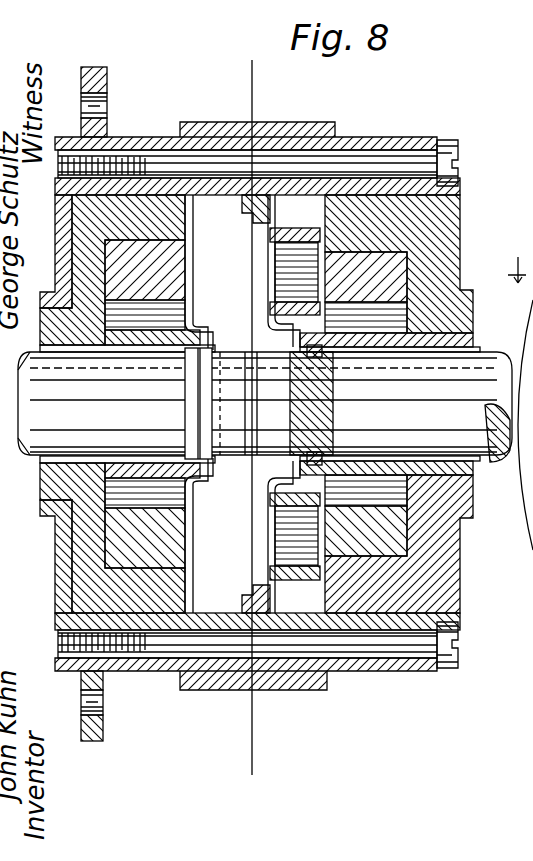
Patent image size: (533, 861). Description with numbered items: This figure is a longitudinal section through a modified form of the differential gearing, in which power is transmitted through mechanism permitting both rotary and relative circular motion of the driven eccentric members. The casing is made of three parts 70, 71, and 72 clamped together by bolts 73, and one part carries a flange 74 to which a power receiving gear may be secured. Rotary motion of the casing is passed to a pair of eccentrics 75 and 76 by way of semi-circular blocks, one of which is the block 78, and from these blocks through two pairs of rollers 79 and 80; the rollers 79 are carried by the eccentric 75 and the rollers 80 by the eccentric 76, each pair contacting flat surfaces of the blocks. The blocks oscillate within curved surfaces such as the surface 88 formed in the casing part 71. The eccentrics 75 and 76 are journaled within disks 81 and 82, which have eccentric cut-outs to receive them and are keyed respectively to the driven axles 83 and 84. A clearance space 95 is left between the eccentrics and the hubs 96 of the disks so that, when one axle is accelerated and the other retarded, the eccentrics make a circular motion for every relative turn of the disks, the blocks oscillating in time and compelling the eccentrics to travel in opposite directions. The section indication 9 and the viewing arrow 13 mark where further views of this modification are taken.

The section line 9 is at (240, 87).
The wheel rim 13 is at (517, 283).
The casing part 70 is at (128, 140).
The casing part 71 is at (282, 124).
The casing part 72 is at (398, 162).
The bolts 73 is at (438, 150).
The flange 74 is at (107, 80).
The eccentric 75 is at (128, 262).
The eccentric 76 is at (380, 278).
The semi-circular block 78 is at (330, 622).
The rollers 79 is at (232, 514).
The rollers 80 is at (275, 232).
The disk 81 is at (94, 534).
The disk 82 is at (430, 592).
The driven axle 83 is at (50, 348).
The driven axle 84 is at (476, 368).
The curved surface 88 is at (292, 625).
The clearance space 95 is at (66, 498).
The hubs 96 is at (90, 474).